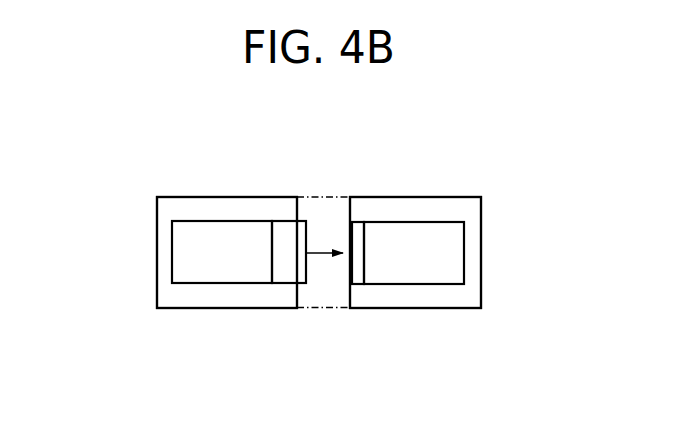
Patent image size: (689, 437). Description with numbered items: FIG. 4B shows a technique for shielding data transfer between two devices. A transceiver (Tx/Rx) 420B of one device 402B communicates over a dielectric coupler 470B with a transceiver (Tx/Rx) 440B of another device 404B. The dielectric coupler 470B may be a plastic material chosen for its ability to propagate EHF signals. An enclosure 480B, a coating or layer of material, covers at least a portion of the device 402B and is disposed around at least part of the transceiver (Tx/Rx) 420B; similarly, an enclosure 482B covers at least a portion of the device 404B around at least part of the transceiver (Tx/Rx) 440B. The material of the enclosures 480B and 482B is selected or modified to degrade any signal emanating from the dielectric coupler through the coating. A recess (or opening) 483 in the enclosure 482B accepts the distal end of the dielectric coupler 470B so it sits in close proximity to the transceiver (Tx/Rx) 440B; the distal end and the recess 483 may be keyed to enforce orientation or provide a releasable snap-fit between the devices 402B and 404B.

The device 402B is at (173, 131).
The device 404B is at (467, 131).
The transceiver (Tx/Rx) 420B is at (185, 221).
The enclosure 480B is at (276, 197).
The dielectric coupler 470B is at (283, 285).
The recess (or opening) 483 is at (350, 233).
The enclosure 482B is at (380, 197).
The transceiver (Tx/Rx) 440B is at (450, 222).